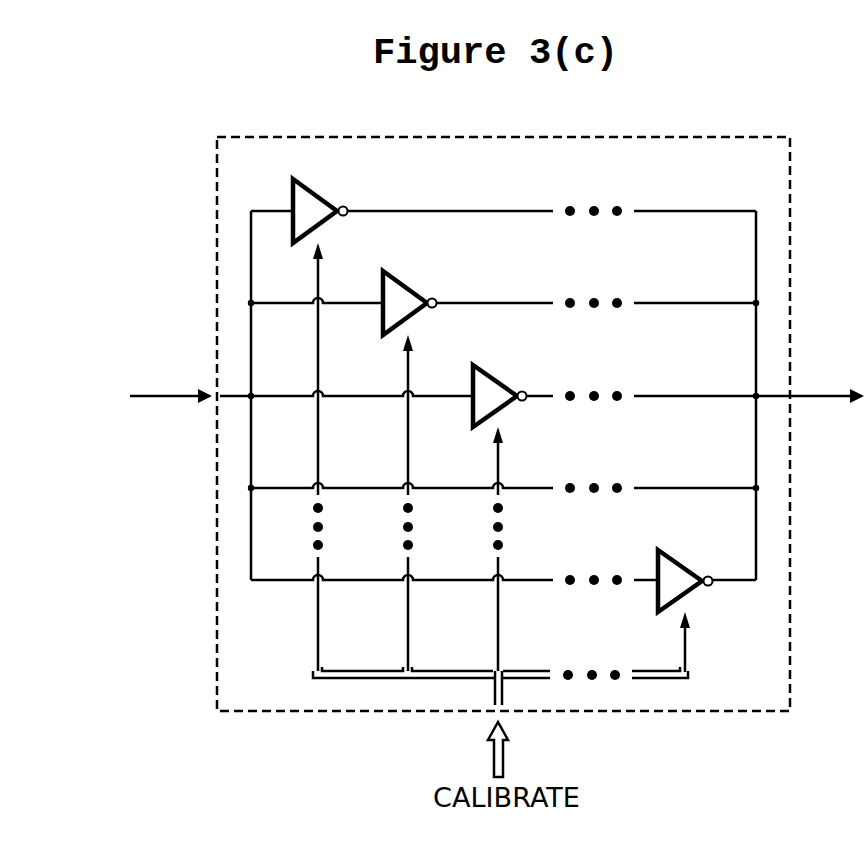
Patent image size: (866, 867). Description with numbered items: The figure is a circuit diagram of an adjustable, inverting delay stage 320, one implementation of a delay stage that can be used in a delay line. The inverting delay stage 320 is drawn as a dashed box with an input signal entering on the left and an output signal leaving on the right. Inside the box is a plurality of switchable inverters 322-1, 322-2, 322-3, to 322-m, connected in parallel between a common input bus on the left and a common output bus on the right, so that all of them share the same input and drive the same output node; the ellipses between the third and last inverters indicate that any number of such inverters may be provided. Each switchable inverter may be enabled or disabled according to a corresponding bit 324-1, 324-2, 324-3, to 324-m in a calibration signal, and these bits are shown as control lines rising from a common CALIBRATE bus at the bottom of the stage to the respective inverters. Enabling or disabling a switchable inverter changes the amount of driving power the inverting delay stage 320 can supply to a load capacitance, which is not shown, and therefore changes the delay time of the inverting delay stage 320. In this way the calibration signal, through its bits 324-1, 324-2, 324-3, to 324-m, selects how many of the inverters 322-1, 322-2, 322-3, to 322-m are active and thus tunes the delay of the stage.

The inverting delay stage 320 is at (503, 407).
The switchable inverter 322-1 is at (337, 201).
The switchable inverter 322-2 is at (431, 295).
The switchable inverter 322-3 is at (519, 387).
The switchable inverter 322-m is at (702, 569).
The bit in a calibration signal 324-1 is at (350, 457).
The bit in a calibration signal 324-2 is at (441, 503).
The bit in a calibration signal 324-3 is at (531, 549).
The bit in a calibration signal 324-m is at (725, 642).